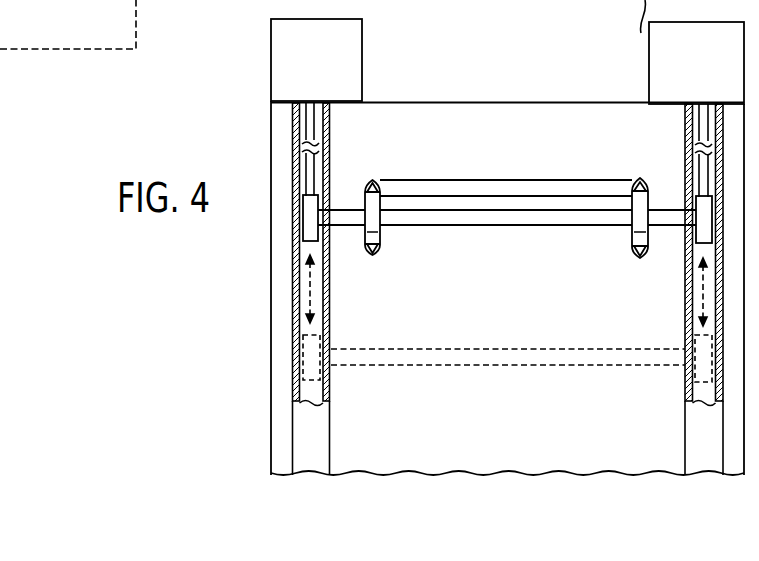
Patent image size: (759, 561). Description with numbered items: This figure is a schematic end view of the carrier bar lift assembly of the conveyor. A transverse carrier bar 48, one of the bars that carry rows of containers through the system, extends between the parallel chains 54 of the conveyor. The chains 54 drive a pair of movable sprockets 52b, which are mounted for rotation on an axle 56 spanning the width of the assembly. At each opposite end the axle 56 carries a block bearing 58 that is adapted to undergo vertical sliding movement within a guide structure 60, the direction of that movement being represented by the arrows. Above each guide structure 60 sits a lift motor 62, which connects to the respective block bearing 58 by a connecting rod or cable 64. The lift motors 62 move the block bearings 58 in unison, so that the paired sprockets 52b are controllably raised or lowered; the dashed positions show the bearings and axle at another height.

The lift motor 62 is at (362, 38).
The connecting rod or cable 64 is at (310, 139).
The carrier bar 48 is at (497, 185).
The parallel chain 54 is at (371, 178).
The movable sprocket 52b is at (377, 233).
The axle 56 is at (489, 219).
The block bearing 58 is at (312, 240).
The guide structure 60 is at (291, 308).